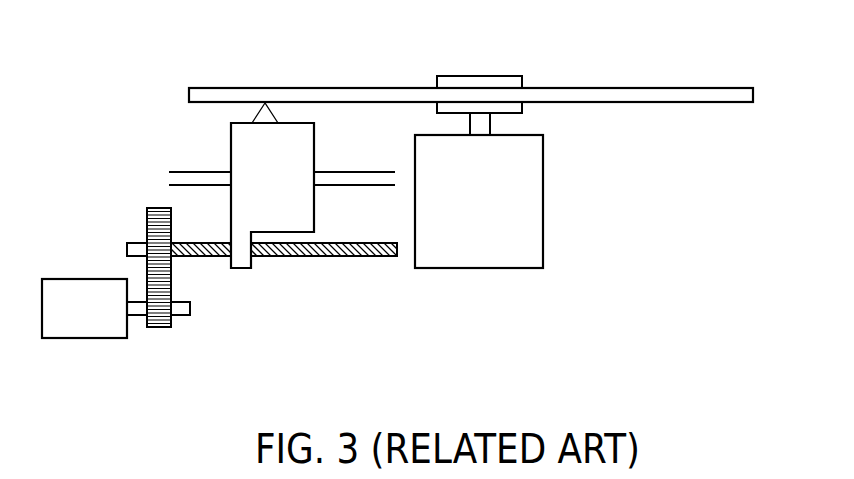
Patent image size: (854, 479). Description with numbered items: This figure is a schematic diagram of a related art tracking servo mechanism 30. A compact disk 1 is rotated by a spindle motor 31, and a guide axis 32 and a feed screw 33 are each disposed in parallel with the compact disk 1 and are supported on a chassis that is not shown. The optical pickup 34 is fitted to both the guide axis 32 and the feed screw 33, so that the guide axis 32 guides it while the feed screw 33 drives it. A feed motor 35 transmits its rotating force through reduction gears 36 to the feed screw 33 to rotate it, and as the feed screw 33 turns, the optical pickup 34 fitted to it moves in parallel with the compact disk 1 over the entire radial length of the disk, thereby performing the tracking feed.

The tracking servo mechanism 30 is at (220, 37).
The compact disk 1 is at (712, 88).
The spindle motor 31 is at (505, 268).
The guide axis 32 is at (345, 172).
The feed screw 33 is at (327, 257).
The optical pickup 34 is at (231, 140).
The feed motor 35 is at (68, 278).
The reduction gears 36 is at (171, 268).